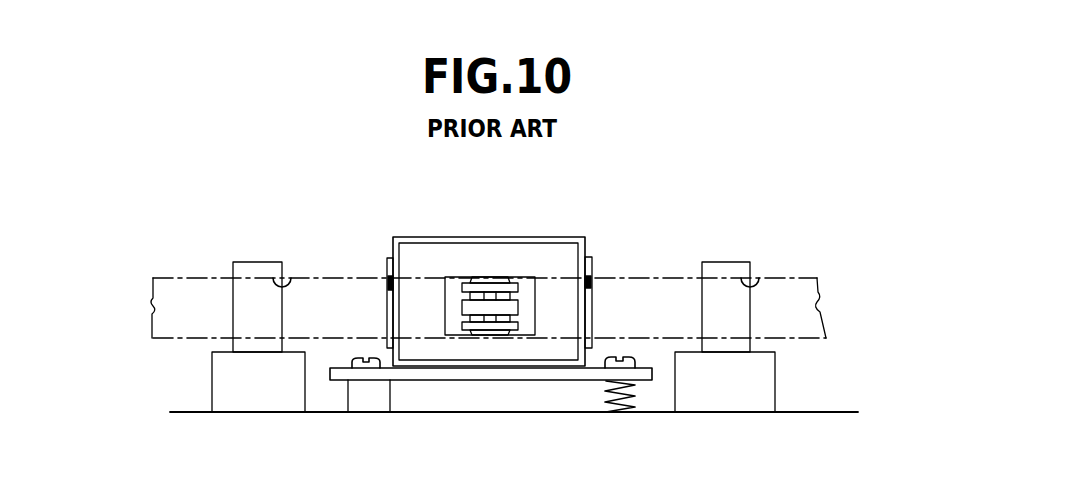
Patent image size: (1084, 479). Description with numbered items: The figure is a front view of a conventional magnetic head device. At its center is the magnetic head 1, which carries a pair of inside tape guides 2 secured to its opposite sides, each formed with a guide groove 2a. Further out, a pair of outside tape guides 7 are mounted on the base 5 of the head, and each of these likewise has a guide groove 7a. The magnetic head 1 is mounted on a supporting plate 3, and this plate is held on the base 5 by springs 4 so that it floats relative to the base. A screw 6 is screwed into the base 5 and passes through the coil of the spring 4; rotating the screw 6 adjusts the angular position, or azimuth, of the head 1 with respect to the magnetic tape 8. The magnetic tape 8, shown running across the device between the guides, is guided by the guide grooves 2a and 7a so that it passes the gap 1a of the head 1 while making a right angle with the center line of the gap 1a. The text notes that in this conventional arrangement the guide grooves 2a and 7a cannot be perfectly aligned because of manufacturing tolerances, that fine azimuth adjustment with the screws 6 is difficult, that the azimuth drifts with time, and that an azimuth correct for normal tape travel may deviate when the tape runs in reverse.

The magnetic head 1 is at (477, 237).
The gap 1a is at (491, 277).
The inside tape guides 2 is at (388, 268).
The guide grooves 2a is at (387, 297).
The supporting plate 3 is at (430, 372).
The springs 4 is at (640, 386).
The base 5 is at (806, 412).
The screw 6 is at (356, 358).
The outside tape guides 7 is at (258, 262).
The guide grooves 7a is at (283, 288).
The magnetic tape 8 is at (203, 278).